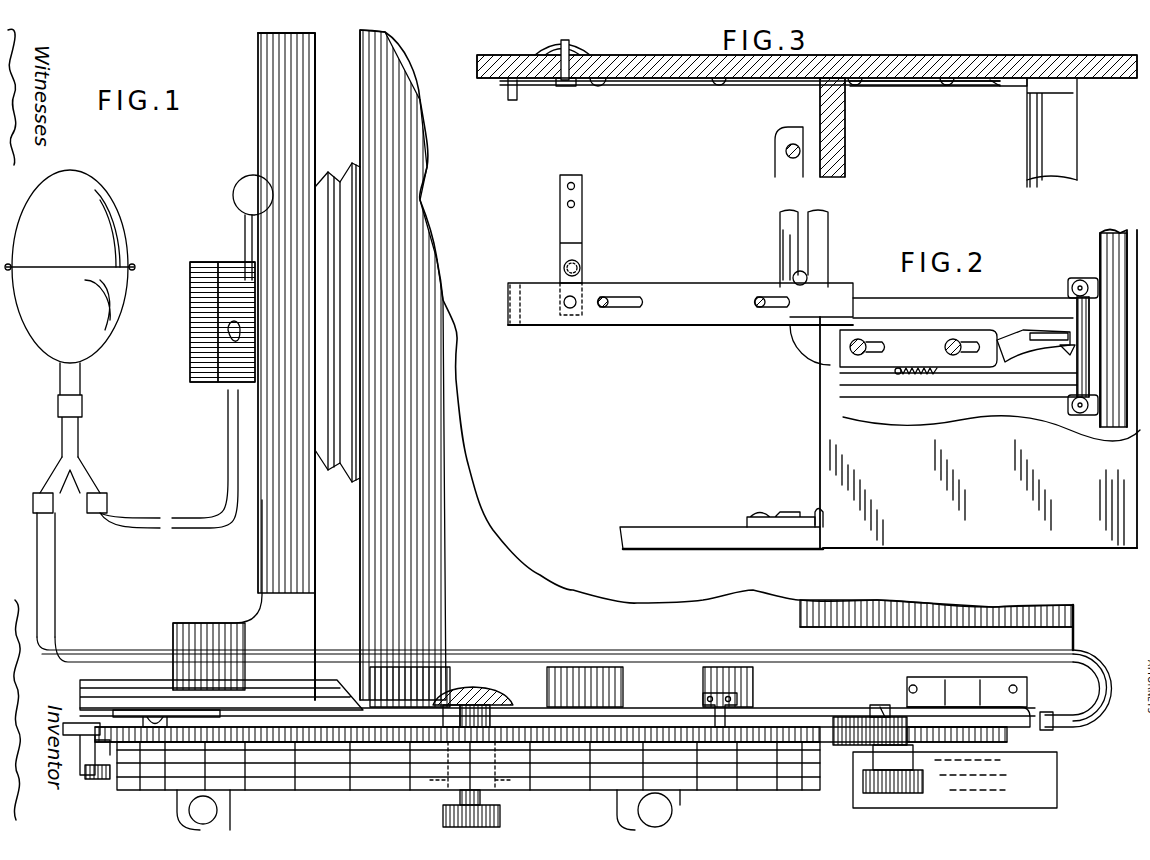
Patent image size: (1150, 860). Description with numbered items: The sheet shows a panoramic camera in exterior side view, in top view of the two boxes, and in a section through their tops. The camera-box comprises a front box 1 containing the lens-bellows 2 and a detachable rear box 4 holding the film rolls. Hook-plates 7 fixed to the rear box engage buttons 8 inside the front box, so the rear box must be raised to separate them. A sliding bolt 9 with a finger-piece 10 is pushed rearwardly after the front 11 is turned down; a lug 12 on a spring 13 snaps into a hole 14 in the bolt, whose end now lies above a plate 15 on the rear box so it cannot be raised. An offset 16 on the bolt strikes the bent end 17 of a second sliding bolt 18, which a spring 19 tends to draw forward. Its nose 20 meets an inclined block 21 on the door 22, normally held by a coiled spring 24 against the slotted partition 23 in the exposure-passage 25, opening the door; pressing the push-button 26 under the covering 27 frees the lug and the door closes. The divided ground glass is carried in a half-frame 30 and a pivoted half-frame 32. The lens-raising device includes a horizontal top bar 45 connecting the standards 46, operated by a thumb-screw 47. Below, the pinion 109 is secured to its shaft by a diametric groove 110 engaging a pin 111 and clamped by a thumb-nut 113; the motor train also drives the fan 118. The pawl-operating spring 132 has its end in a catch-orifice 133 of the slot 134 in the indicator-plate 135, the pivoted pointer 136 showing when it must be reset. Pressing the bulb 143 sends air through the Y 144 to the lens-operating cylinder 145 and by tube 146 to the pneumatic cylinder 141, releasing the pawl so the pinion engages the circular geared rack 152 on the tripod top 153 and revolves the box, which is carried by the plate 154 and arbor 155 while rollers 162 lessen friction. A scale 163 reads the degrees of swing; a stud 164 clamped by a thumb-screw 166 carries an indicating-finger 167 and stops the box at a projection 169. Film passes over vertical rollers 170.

In FIG. 1, the front box 1 is at (460, 428).
In FIG. 3, the front box 1 is at (650, 55).
In FIG. 2, the front box 1 is at (650, 527).
In FIG. 1, the lens-bellows 2 is at (336, 170).
In FIG. 1, the rear box 4 is at (1075, 623).
In FIG. 3, the rear box 4 is at (998, 55).
In FIG. 2, the rear box 4 is at (977, 492).
In FIG. 3, the hook-plates 7 is at (820, 118).
In FIG. 2, the hook-plates 7 is at (820, 510).
In FIG. 3, the buttons 8 is at (773, 157).
In FIG. 2, the buttons 8 is at (790, 528).
In FIG. 3, the sliding bolt 9 is at (683, 80).
In FIG. 2, the sliding bolt 9 is at (682, 283).
In FIG. 3, the finger-piece 10 is at (512, 100).
In FIG. 2, the finger-piece 10 is at (520, 325).
In FIG. 1, the front 11 is at (78, 684).
In FIG. 3, the lug 12 is at (582, 52).
In FIG. 2, the lug 12 is at (571, 310).
In FIG. 3, the spring 13 is at (584, 88).
In FIG. 2, the spring 13 is at (582, 230).
In FIG. 3, the hole 14 is at (560, 88).
In FIG. 2, the hole 14 is at (578, 298).
In FIG. 3, the plate 15 is at (760, 86).
In FIG. 2, the plate 15 is at (830, 275).
In FIG. 2, the offset 16 is at (805, 352).
In FIG. 3, the bent end 17 is at (855, 88).
In FIG. 2, the bent end 17 is at (855, 330).
In FIG. 3, the second sliding bolt 18 is at (915, 86).
In FIG. 2, the second sliding bolt 18 is at (918, 348).
In FIG. 2, the spring 19 is at (915, 378).
In FIG. 3, the nose 20 is at (1077, 90).
In FIG. 2, the nose 20 is at (1035, 380).
In FIG. 3, the inclined block 21 is at (1073, 78).
In FIG. 2, the inclined block 21 is at (1068, 350).
In FIG. 3, the door 22 is at (1077, 162).
In FIG. 2, the door 22 is at (1083, 332).
In FIG. 2, the partition 23 is at (1000, 380).
In FIG. 2, the coiled spring 24 is at (1050, 332).
In FIG. 2, the exposure-passage 25 is at (822, 385).
In FIG. 3, the push-button 26 is at (565, 42).
In FIG. 2, the push-button 26 is at (562, 268).
In FIG. 3, the covering 27 is at (545, 52).
In FIG. 2, the half-frame 30 is at (800, 224).
In FIG. 2, the pivoted half-frame 32 is at (785, 248).
In FIG. 1, the horizontal top bar 45 is at (262, 48).
In FIG. 1, the standards 46 is at (234, 581).
In FIG. 1, the thumb-screw 47 is at (236, 190).
In FIG. 1, the pinion 109 is at (845, 747).
In FIG. 1, the diametric groove 110 is at (872, 710).
In FIG. 1, the pin 111 is at (897, 712).
In FIG. 2, the pin 111 is at (1090, 340).
In FIG. 1, the thumb-nut 113 is at (925, 790).
In FIG. 1, the fan 118 is at (1057, 803).
In FIG. 1, the pawl-operating spring 132 is at (915, 712).
In FIG. 1, the catch-orifice 133 is at (898, 710).
In FIG. 1, the slot 134 is at (973, 715).
In FIG. 1, the indicator-plate 135 is at (1022, 690).
In FIG. 1, the pivoted pointer 136 is at (995, 705).
In FIG. 1, the pneumatic cylinder 141 is at (1050, 730).
In FIG. 1, the bulb 143 is at (70, 313).
In FIG. 1, the Y 144 is at (80, 468).
In FIG. 1, the lens-operating cylinder 145 is at (228, 392).
In FIG. 1, the tube 146 is at (1100, 655).
In FIG. 1, the circular geared rack 152 is at (640, 725).
In FIG. 1, the top 153 is at (472, 772).
In FIG. 1, the plate 154 is at (450, 690).
In FIG. 1, the arbor 155 is at (492, 718).
In FIG. 1, the rollers 162 is at (158, 722).
In FIG. 1, the scale 163 is at (382, 775).
In FIG. 1, the stud 164 is at (85, 775).
In FIG. 1, the thumb-screw 166 is at (108, 780).
In FIG. 1, the indicating-finger 167 is at (112, 760).
In FIG. 1, the projection 169 is at (742, 775).
In FIG. 2, the vertical rollers 170 is at (1080, 278).